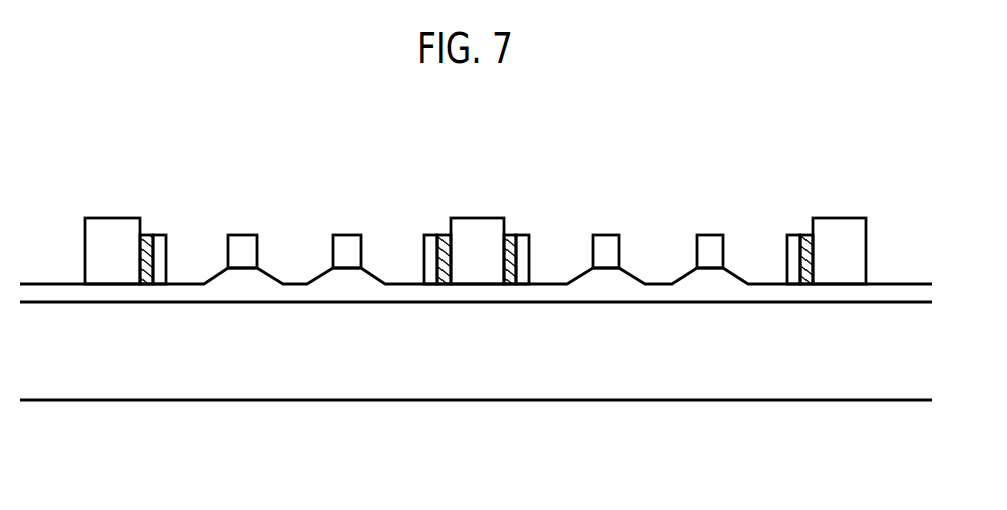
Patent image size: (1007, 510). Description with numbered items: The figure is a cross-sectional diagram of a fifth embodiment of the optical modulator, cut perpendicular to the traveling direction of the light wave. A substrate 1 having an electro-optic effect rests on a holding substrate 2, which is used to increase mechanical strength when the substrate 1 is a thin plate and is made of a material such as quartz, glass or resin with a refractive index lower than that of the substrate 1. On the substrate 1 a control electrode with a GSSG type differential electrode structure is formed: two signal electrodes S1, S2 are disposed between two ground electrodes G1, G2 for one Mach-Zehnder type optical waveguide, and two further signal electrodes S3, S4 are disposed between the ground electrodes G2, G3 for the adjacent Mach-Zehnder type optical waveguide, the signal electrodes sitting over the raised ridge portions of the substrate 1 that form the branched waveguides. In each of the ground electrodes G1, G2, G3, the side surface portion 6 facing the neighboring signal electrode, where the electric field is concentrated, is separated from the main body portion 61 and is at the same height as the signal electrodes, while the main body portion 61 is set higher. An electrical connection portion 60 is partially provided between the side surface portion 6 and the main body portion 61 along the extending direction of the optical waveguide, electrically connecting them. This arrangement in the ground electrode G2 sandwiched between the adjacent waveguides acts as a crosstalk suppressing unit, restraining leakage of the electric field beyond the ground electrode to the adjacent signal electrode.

The substrate 1 is at (210, 291).
The holding substrate 2 is at (427, 365).
The side surface portion 6 is at (160, 235).
The electrical connection portion 60 is at (148, 235).
The main body portion 61 is at (475, 322).
The ground electrode G1 is at (112, 230).
The ground electrode G2 is at (477, 230).
The ground electrode G3 is at (839, 229).
The signal electrode S1 is at (242, 230).
The signal electrode S2 is at (347, 230).
The signal electrode S3 is at (605, 230).
The signal electrode S4 is at (709, 230).